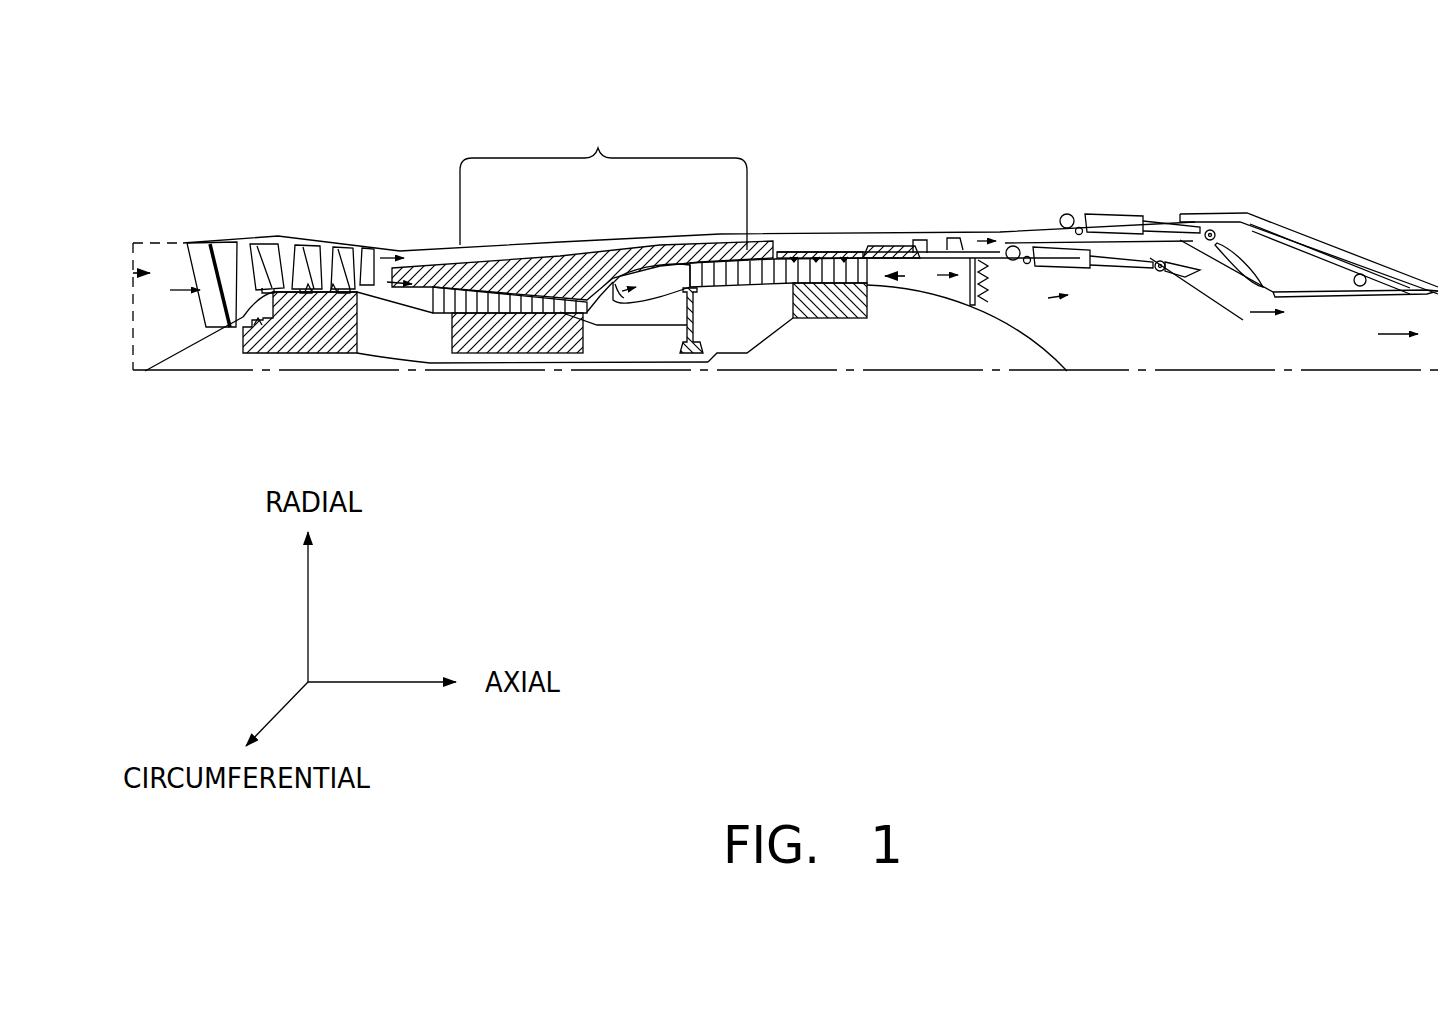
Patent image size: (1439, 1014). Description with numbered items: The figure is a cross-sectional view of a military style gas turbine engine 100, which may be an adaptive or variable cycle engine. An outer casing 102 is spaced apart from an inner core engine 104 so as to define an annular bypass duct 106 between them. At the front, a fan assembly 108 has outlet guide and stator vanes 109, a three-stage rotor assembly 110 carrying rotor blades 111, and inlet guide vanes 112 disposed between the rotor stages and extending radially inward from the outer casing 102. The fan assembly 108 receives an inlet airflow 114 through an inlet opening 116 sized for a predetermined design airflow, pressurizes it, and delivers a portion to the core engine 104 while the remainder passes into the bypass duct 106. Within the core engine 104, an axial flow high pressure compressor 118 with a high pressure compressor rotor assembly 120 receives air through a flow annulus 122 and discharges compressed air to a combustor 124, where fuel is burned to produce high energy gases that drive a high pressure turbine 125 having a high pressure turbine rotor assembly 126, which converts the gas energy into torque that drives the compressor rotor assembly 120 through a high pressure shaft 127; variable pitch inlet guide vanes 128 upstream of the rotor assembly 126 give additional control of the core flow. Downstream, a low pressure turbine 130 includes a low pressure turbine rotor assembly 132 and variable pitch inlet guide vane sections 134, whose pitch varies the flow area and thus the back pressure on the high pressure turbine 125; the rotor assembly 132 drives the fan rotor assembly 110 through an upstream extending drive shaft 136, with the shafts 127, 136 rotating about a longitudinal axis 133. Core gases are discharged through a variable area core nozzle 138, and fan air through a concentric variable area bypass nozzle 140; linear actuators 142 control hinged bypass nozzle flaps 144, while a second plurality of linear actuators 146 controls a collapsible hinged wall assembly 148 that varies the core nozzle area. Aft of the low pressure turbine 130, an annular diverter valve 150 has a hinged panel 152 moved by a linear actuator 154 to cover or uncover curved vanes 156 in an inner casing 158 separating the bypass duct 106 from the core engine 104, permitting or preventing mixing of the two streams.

The military style gas turbine engine 100 is at (884, 122).
The outer casing 102 is at (462, 258).
The inner core engine 104 is at (600, 150).
The annular bypass duct 106 is at (770, 240).
The fan assembly 108 is at (272, 222).
The outlet guide and stator vanes 109 is at (281, 241).
The three-stage rotor assembly 110 is at (298, 353).
The rotor blades 111 is at (338, 290).
The inlet guide vanes 112 is at (227, 250).
The inlet airflow 114 is at (185, 290).
The inlet opening 116 is at (183, 243).
The axial flow high pressure compressor 118 is at (533, 300).
The high pressure compressor rotor assembly 120 is at (518, 348).
The flow annulus 122 is at (424, 287).
The combustor 124 is at (653, 282).
The high pressure turbine 125 is at (728, 318).
The high pressure turbine rotor assembly 126 is at (690, 353).
The high pressure shaft 127 is at (614, 328).
The variable pitch inlet guide vanes 128 is at (681, 280).
The low pressure turbine 130 is at (912, 292).
The low pressure turbine rotor assembly 132 is at (840, 318).
The longitudinal axis 133 is at (1305, 378).
The variable pitch inlet guide vane sections 134 is at (848, 257).
The drive shaft 136 is at (662, 364).
The variable area core nozzle 138 is at (1340, 357).
The variable area bypass nozzle 140 is at (1257, 312).
The linear actuators 142 is at (1058, 266).
The hinged bypass nozzle flaps 144 is at (1217, 303).
The second plurality of linear actuators 146 is at (1113, 222).
The collapsible hinged wall assembly 148 is at (1332, 234).
The annular diverter valve 150 is at (919, 219).
The hinged panel 152 is at (903, 253).
The linear actuator 154 is at (960, 243).
The vanes 156 is at (906, 277).
The inner casing 158 is at (757, 240).